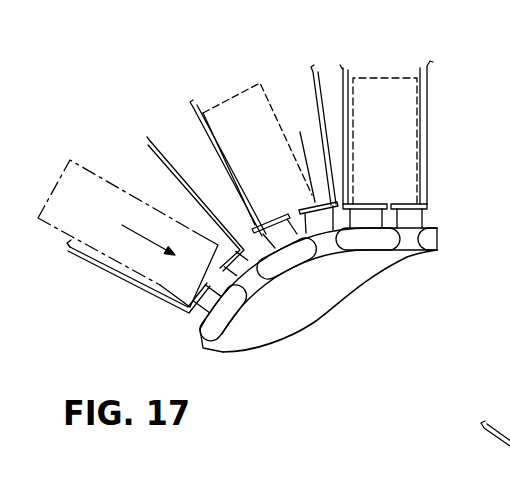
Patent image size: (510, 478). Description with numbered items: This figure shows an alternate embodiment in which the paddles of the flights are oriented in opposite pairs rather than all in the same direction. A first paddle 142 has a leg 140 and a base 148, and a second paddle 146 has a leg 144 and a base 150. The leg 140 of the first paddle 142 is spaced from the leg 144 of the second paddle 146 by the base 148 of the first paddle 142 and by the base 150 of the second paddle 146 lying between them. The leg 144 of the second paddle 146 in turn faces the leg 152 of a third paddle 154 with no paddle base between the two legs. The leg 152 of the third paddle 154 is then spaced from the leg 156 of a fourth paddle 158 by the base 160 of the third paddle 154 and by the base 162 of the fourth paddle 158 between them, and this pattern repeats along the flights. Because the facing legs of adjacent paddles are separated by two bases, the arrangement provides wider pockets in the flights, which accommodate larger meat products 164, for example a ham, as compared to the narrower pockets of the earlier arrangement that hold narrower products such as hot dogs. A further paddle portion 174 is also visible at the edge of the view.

The leg 140 is at (217, 153).
The first paddle 142 is at (193, 110).
The leg 144 is at (312, 96).
The second paddle 146 is at (314, 70).
The base 148 is at (270, 213).
The base 150 is at (297, 150).
The leg 152 is at (353, 112).
The third paddle 154 is at (346, 68).
The leg 156 is at (428, 134).
The fourth paddle 158 is at (429, 67).
The base 160 is at (370, 203).
The base 162 is at (407, 203).
The meat product 164 is at (373, 78).
The side wall of adjacent tray 174 is at (509, 380).